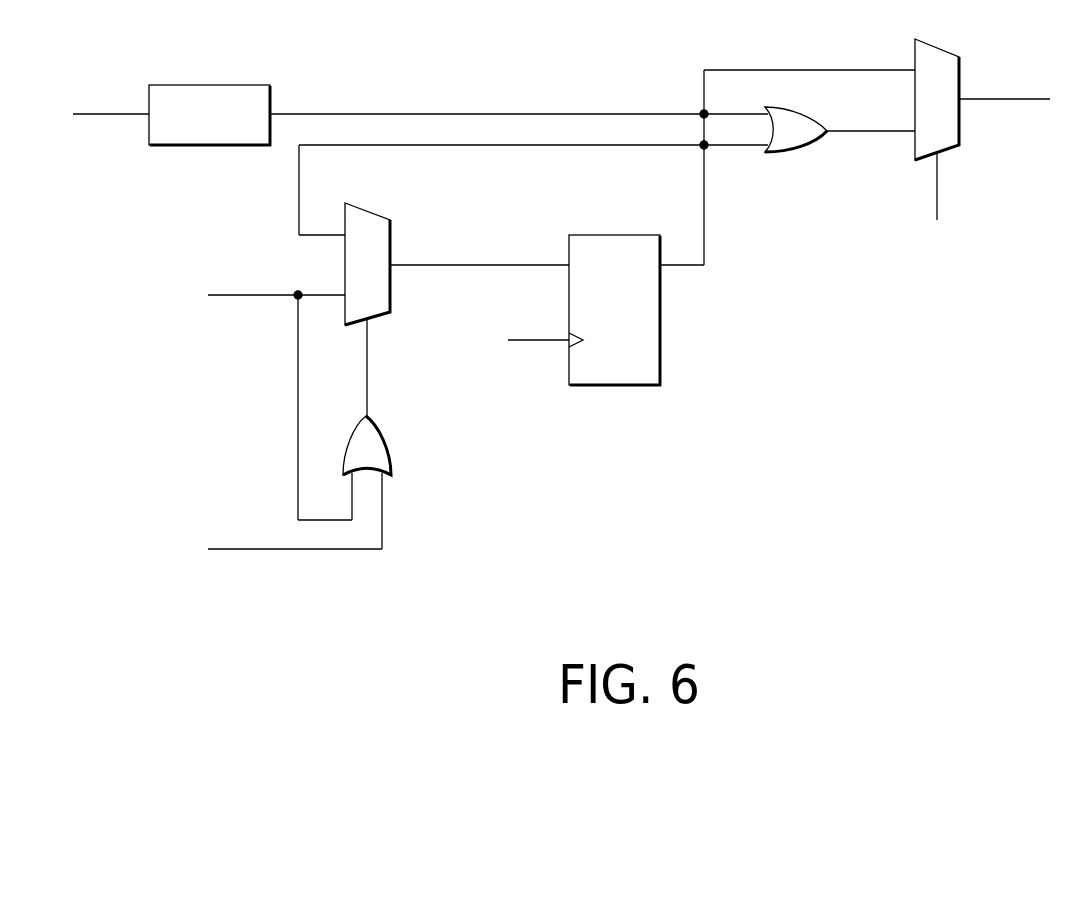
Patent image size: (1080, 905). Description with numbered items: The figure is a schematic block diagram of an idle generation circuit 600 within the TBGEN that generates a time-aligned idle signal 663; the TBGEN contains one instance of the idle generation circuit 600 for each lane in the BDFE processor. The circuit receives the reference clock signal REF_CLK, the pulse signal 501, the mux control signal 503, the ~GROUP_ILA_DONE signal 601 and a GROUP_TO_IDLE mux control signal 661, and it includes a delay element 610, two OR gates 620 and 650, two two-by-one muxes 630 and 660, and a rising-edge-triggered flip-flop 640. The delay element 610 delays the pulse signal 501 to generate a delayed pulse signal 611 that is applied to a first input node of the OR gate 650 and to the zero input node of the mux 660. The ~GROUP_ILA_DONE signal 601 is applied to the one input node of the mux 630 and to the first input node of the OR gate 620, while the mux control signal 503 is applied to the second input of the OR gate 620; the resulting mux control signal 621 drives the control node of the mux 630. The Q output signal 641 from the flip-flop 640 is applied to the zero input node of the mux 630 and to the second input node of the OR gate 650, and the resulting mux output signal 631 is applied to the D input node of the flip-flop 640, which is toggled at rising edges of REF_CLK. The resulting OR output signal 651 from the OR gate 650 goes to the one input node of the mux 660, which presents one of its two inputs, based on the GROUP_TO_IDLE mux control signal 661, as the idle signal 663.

The pulse signal 501 is at (113, 114).
The mux control signal 503 is at (262, 551).
The idle generation circuit 600 is at (845, 669).
The ~GROUP_ILA_DONE signal 601 is at (259, 297).
The delay element 610 is at (233, 84).
The delayed pulse signal 611 is at (480, 114).
The OR gate 620 is at (392, 447).
The mux control signal 621 is at (368, 387).
The mux 630 is at (368, 205).
The mux output signal 631 is at (478, 264).
The flip-flop 640 is at (613, 234).
The Q output signal 641 is at (705, 232).
The OR gate 650 is at (787, 153).
The OR output signal 651 is at (871, 132).
The mux 660 is at (937, 41).
The GROUP_TO_IDLE mux control signal 661 is at (938, 197).
The idle signal 663 is at (1003, 98).